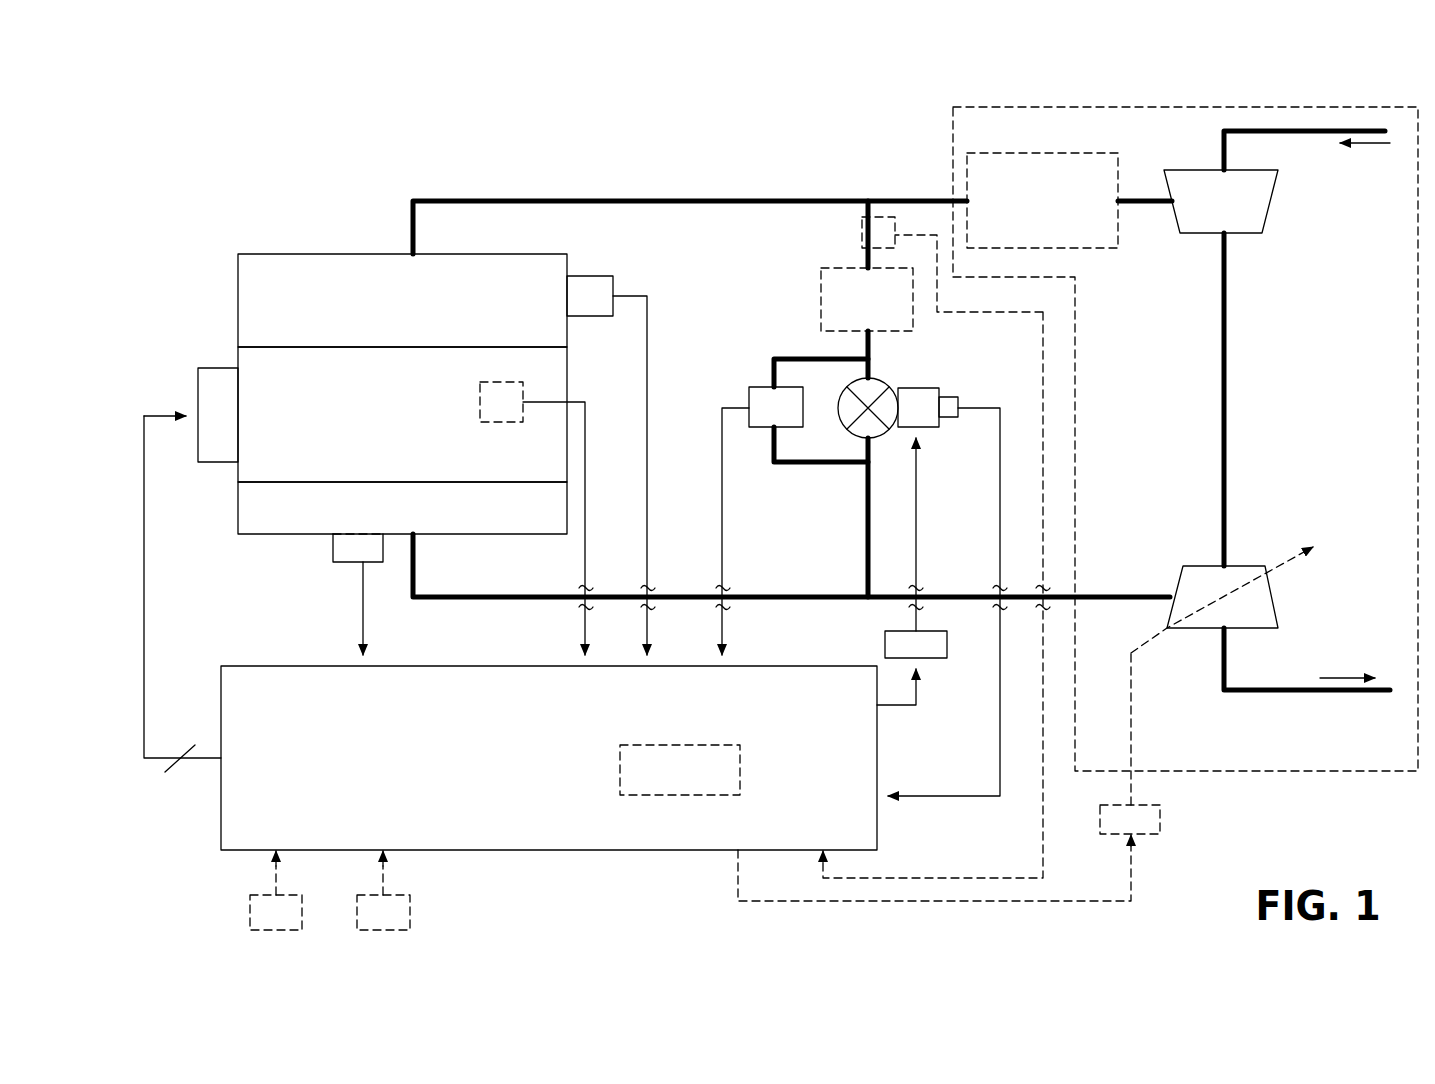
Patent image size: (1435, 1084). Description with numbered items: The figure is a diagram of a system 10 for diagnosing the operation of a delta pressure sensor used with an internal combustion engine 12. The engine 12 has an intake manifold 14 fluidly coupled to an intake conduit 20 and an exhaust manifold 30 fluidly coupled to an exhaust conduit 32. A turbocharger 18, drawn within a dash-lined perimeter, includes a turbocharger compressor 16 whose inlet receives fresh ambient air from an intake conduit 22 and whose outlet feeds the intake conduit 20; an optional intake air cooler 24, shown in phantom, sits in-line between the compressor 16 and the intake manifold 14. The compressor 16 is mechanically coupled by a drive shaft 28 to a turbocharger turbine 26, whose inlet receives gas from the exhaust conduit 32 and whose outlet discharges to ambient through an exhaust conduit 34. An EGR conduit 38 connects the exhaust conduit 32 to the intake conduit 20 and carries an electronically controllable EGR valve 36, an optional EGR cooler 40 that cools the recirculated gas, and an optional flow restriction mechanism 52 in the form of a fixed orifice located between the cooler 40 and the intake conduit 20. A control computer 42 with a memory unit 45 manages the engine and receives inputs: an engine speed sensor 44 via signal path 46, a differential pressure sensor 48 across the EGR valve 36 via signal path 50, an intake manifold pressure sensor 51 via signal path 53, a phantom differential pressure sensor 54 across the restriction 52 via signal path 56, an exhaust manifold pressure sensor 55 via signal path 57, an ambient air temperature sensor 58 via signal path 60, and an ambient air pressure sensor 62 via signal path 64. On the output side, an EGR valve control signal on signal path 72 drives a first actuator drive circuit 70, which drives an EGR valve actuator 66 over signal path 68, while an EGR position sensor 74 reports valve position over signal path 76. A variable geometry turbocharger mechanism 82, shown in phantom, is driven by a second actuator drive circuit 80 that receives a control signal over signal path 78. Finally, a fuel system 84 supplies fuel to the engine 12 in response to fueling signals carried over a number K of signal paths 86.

The system 10 is at (255, 190).
The internal combustion engine 12 is at (238, 358).
The intake manifold 14 is at (362, 254).
The turbocharger compressor 16 is at (1268, 212).
The turbocharger 18 is at (1340, 771).
The intake conduit 20 is at (740, 201).
The intake conduit 22 is at (1224, 152).
The intake air cooler 24 is at (1100, 250).
The turbocharger turbine 26 is at (1278, 600).
The drive shaft 28 is at (1224, 406).
The exhaust manifold 30 is at (265, 534).
The exhaust conduit 32 is at (500, 597).
The exhaust conduit 34 is at (1258, 690).
The EGR valve 36 is at (885, 380).
The EGR conduit 38 is at (868, 478).
The EGR cooler 40 is at (821, 300).
The control computer 42 is at (548, 850).
The engine speed sensor 44 is at (497, 424).
The memory unit 45 is at (620, 765).
The signal path 46 is at (585, 545).
The differential pressure sensor 48 is at (762, 387).
The signal path 50 is at (722, 408).
The intake manifold pressure sensor 51 is at (613, 285).
The flow restriction mechanism 52 is at (862, 236).
The signal path 53 is at (647, 366).
The differential pressure sensor 54 is at (878, 201).
The exhaust manifold pressure sensor 55 is at (347, 562).
The signal path 56 is at (1043, 822).
The signal path 57 is at (363, 616).
The ambient air temperature sensor 58 is at (250, 910).
The signal path 60 is at (268, 886).
The ambient air pressure sensor 62 is at (414, 908).
The signal path 64 is at (378, 872).
The EGR valve actuator 66 is at (930, 388).
The signal path 68 is at (916, 478).
The first actuator drive circuit 70 is at (937, 658).
The signal path 72 is at (893, 705).
The EGR position sensor 74 is at (958, 402).
The signal path 76 is at (1000, 520).
The signal path 78 is at (1118, 901).
The second actuator drive circuit 80 is at (1150, 834).
The variable geometry turbocharger mechanism 82 is at (1290, 560).
The fuel system 84 is at (222, 462).
The signal paths 86 is at (144, 592).